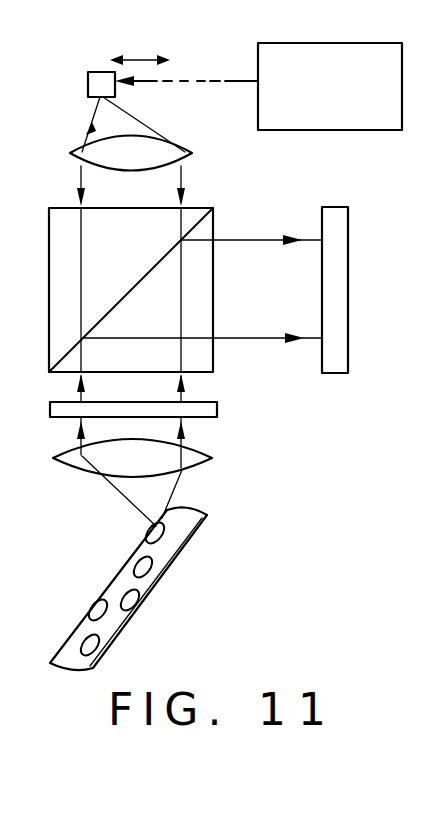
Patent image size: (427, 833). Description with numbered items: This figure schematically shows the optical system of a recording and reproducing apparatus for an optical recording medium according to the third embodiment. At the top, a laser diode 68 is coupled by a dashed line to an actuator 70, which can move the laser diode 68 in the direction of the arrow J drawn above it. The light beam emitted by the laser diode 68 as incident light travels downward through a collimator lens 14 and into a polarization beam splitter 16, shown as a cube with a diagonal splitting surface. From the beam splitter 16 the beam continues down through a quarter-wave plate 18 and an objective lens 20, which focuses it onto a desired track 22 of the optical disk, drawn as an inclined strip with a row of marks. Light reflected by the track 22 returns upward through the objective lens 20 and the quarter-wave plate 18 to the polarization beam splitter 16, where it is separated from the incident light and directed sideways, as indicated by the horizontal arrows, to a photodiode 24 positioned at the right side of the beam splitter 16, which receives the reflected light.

The laser diode 68 is at (88, 80).
The arrow J is at (140, 48).
The actuator 70 is at (370, 43).
The collimator lens 14 is at (78, 152).
The polarization beam splitter 16 is at (63, 206).
The photodiode 24 is at (339, 206).
The λ/4 plate 18 is at (69, 400).
The objective lens 20 is at (66, 464).
The track 22 is at (118, 588).